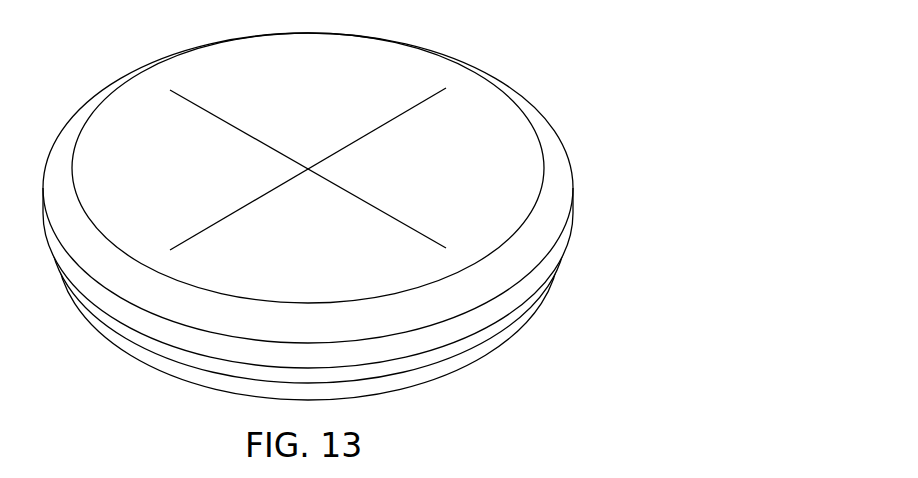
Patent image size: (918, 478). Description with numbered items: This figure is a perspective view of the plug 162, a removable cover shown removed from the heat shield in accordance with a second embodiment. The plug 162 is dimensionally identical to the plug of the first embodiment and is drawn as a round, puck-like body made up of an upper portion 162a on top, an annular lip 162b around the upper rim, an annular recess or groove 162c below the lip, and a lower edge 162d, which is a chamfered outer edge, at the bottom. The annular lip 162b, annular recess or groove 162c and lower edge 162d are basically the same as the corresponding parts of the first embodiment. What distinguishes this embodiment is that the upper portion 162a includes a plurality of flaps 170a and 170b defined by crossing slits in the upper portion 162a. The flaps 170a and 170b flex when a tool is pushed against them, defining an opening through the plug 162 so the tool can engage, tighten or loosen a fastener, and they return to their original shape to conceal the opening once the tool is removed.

The plug 162 is at (341, 215).
The upper portion 162a is at (330, 168).
The annular lip 162b is at (577, 238).
The annular recess or groove 162c is at (476, 343).
The lower edge 162d is at (423, 385).
The flap 170a is at (358, 140).
The flap 170b is at (408, 222).